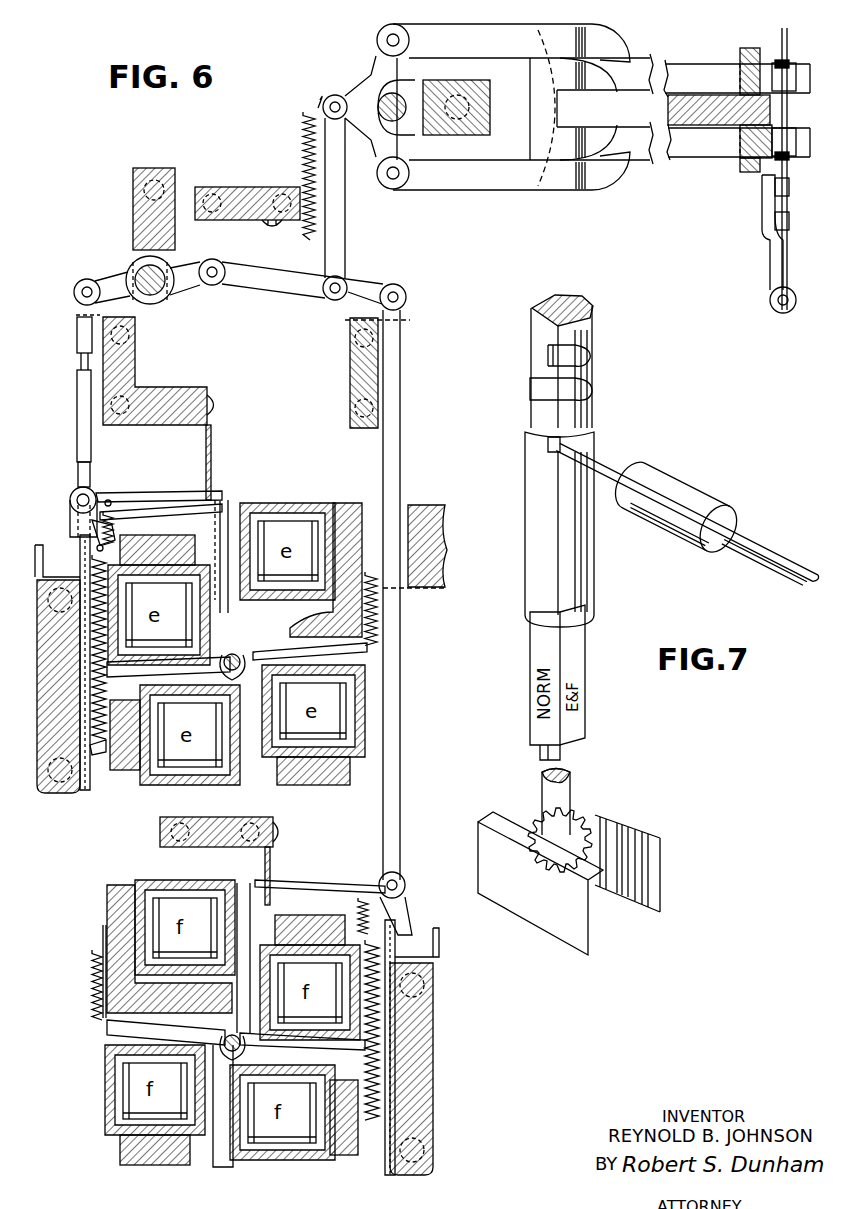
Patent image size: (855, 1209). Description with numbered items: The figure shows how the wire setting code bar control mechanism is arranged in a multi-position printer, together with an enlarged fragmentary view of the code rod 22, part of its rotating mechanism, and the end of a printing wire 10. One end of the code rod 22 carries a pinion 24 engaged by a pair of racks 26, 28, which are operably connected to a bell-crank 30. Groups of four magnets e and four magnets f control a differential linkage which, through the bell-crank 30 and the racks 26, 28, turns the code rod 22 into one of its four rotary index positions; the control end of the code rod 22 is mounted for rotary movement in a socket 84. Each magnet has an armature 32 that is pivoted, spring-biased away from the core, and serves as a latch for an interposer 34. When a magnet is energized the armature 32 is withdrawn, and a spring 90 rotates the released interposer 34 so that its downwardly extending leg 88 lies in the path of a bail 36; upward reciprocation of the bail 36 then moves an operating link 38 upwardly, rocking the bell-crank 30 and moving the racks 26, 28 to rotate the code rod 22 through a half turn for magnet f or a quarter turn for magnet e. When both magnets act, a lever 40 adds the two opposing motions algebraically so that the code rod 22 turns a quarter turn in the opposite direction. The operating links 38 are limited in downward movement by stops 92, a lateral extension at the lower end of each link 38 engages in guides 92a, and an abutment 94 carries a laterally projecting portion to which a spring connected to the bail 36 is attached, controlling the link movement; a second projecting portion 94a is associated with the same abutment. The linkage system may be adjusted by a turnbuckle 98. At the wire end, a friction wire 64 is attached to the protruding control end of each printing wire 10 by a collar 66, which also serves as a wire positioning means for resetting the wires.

In FIG. 6, the printing wire 10 is at (782, 35).
In FIG. 7, the printing wire 10 is at (764, 564).
In FIG. 7, the code rod 22 is at (592, 334).
In FIG. 6, the pinion 24 is at (787, 62).
In FIG. 7, the pinion 24 is at (578, 813).
In FIG. 6, the rack 26 is at (604, 178).
In FIG. 7, the rack 26 is at (535, 915).
In FIG. 6, the rack 28 is at (622, 52).
In FIG. 7, the rack 28 is at (632, 828).
In FIG. 6, the bell-crank 30 is at (380, 62).
In FIG. 6, the armature 32 is at (218, 535).
In FIG. 6, the interposer 34 is at (118, 495).
In FIG. 6, the bail 36 is at (92, 752).
In FIG. 6, the operating link 38 is at (392, 760).
In FIG. 6, the lever 40 is at (295, 295).
In FIG. 7, the friction wire 64 is at (687, 513).
In FIG. 7, the collar 66 is at (676, 506).
In FIG. 6, the socket 84 is at (762, 205).
In FIG. 6, the leg 88 is at (76, 516).
In FIG. 6, the spring 90 is at (118, 525).
In FIG. 6, the stop 92 is at (45, 674).
In FIG. 6, the guide 92a is at (48, 545).
In FIG. 6, the abutment 94 is at (40, 565).
In FIG. 6, the plate post 94a is at (443, 940).
In FIG. 6, the turnbuckle 98 is at (80, 405).